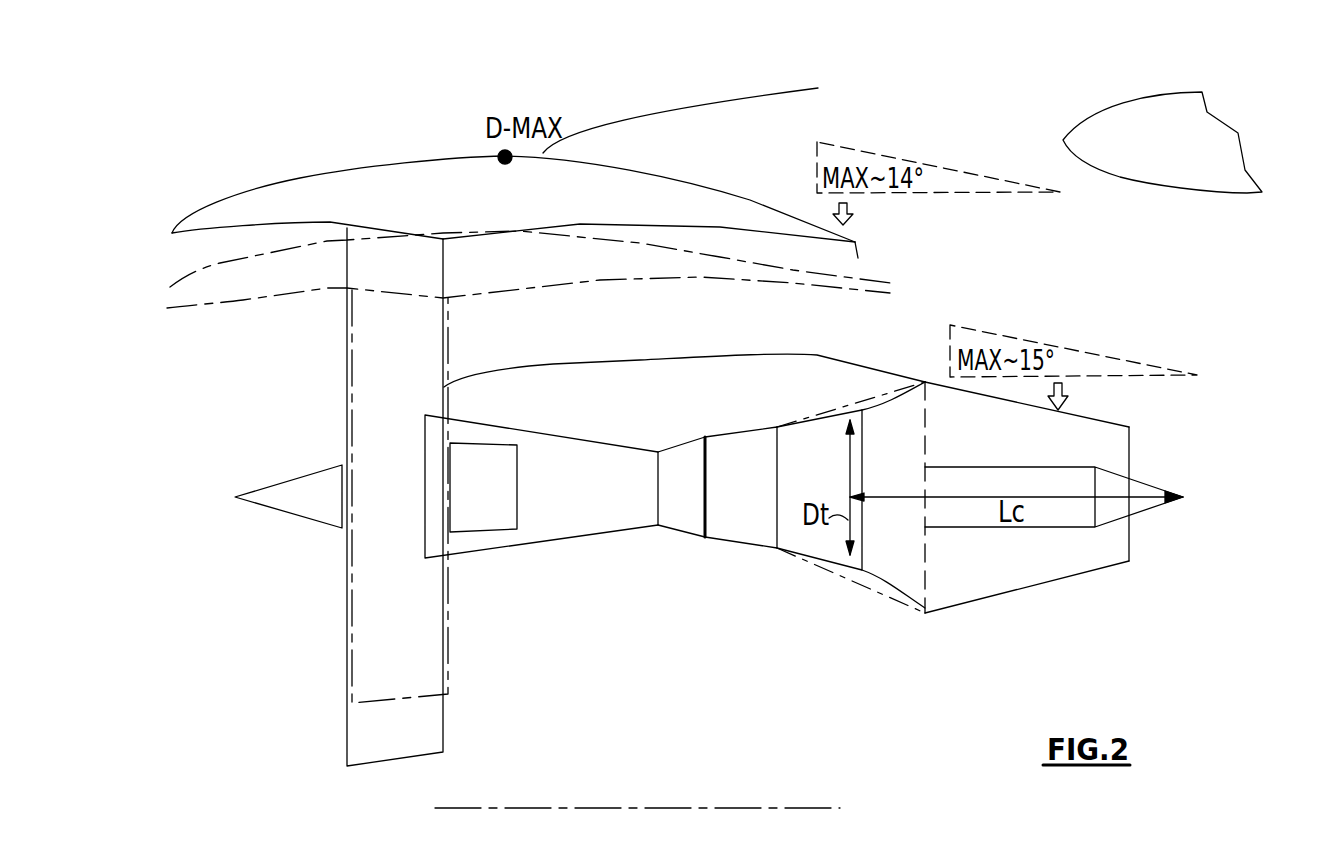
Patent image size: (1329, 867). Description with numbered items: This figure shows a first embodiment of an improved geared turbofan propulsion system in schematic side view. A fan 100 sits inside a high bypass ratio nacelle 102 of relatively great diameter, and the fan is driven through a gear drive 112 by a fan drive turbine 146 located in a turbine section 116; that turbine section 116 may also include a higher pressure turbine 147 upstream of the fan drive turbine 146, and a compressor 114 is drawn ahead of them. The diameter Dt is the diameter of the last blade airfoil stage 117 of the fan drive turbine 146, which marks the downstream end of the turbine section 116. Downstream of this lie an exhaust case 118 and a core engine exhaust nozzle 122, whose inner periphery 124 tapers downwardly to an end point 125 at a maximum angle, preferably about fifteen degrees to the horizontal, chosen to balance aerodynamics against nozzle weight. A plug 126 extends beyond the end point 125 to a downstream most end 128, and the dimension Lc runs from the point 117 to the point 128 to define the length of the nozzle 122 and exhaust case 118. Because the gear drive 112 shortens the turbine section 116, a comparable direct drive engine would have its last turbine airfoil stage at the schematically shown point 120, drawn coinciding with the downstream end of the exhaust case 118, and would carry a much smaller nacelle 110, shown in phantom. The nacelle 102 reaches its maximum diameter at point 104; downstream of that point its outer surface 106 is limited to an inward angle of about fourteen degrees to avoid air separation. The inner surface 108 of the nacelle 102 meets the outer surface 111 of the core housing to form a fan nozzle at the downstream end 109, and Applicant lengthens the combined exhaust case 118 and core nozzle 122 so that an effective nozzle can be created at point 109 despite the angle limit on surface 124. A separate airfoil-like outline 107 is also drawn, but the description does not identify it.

The fan 100 is at (365, 384).
The nacelle 102 is at (402, 170).
The point of maximum nacelle diameter 104 is at (496, 152).
The outer surface of the nacelle 106 is at (682, 188).
The airfoil section 107 is at (1083, 142).
The inner surface of the nacelle 108 is at (724, 232).
The downstream end of the nacelle inner surface 109 is at (858, 258).
The nacelle of a conventional direct drive engine 110 is at (632, 265).
The outer surface of the core housing 111 is at (817, 355).
The gear drive 112 is at (500, 452).
The compressor 114 is at (575, 450).
The turbine section 116 is at (720, 440).
The last blade airfoil stage 117 is at (862, 410).
The exhaust case 118 is at (918, 442).
The point of last turbine airfoil stage of a non-geared engine 120 is at (925, 382).
The core engine exhaust nozzle 122 is at (1118, 450).
The inner periphery of the core engine exhaust nozzle 124 is at (1087, 417).
The end point of the core nozzle housing 125 is at (1129, 562).
The plug 126 is at (1147, 478).
The downstream most end of the plug 128 is at (1187, 497).
The fan drive turbine 146 is at (839, 482).
The higher pressure turbine 147 is at (760, 497).